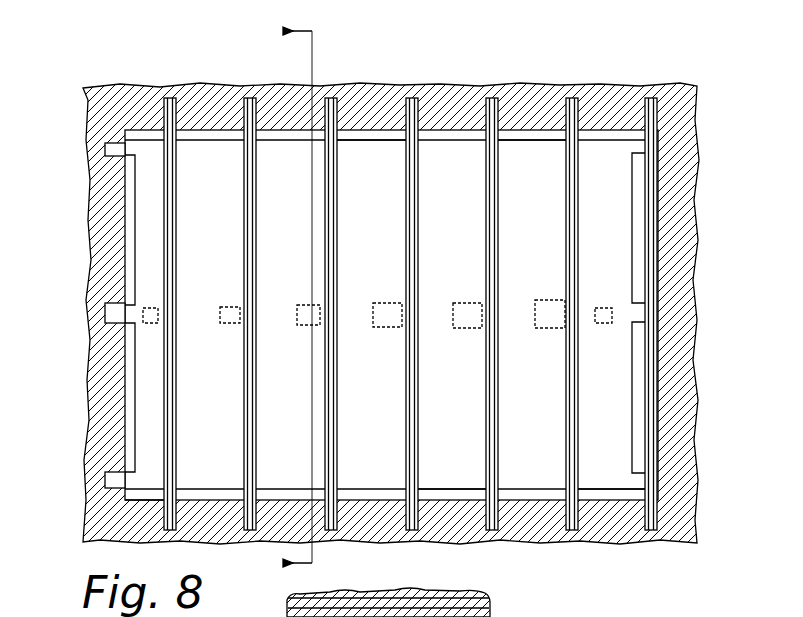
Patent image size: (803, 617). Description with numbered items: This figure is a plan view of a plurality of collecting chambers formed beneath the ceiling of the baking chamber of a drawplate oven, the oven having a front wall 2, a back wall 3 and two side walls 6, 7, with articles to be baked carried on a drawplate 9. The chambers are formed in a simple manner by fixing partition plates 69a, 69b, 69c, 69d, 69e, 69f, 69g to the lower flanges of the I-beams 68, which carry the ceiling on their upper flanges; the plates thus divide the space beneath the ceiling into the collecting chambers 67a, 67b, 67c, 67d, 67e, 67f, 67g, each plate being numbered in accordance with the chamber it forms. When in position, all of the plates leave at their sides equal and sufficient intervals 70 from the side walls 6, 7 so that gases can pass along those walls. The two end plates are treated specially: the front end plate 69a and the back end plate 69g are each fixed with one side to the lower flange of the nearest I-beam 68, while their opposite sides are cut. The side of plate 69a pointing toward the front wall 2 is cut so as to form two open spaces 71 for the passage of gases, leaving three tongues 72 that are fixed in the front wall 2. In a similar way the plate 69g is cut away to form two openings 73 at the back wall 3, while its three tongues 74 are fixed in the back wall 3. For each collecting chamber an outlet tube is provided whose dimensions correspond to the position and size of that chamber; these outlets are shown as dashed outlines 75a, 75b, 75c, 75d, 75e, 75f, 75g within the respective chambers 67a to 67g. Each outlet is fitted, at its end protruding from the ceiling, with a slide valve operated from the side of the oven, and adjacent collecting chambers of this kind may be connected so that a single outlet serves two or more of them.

The front wall 2 is at (96, 218).
The back wall 3 is at (694, 240).
The side wall 6 is at (317, 88).
The side wall 7 is at (455, 540).
The drawplate 9 is at (282, 299).
The I-beams 68 is at (170, 98).
The partition plate 69a is at (112, 505).
The partition plate 69b is at (215, 495).
The partition plate 69c is at (265, 140).
The partition plate 69d is at (367, 136).
The partition plate 69e is at (458, 495).
The partition plate 69f is at (524, 140).
The partition plate 69g is at (614, 497).
The intervals 70 is at (138, 134).
The open spaces 71 is at (128, 257).
The tongues 72 is at (106, 148).
The openings 73 is at (640, 210).
The tongues 74 is at (635, 158).
The collecting chamber 67a is at (148, 290).
The collecting chamber 67b is at (201, 221).
The collecting chamber 67c is at (281, 240).
The collecting chamber 67d is at (362, 243).
The collecting chamber 67e is at (443, 243).
The collecting chamber 67f is at (520, 243).
The collecting chamber 67g is at (603, 245).
The outlet tube 75a is at (151, 323).
The outlet tube 75b is at (230, 323).
The outlet tube 75c is at (307, 325).
The outlet tube 75d is at (382, 327).
The outlet tube 75e is at (463, 328).
The outlet tube 75f is at (546, 328).
The outlet tube 75g is at (603, 323).